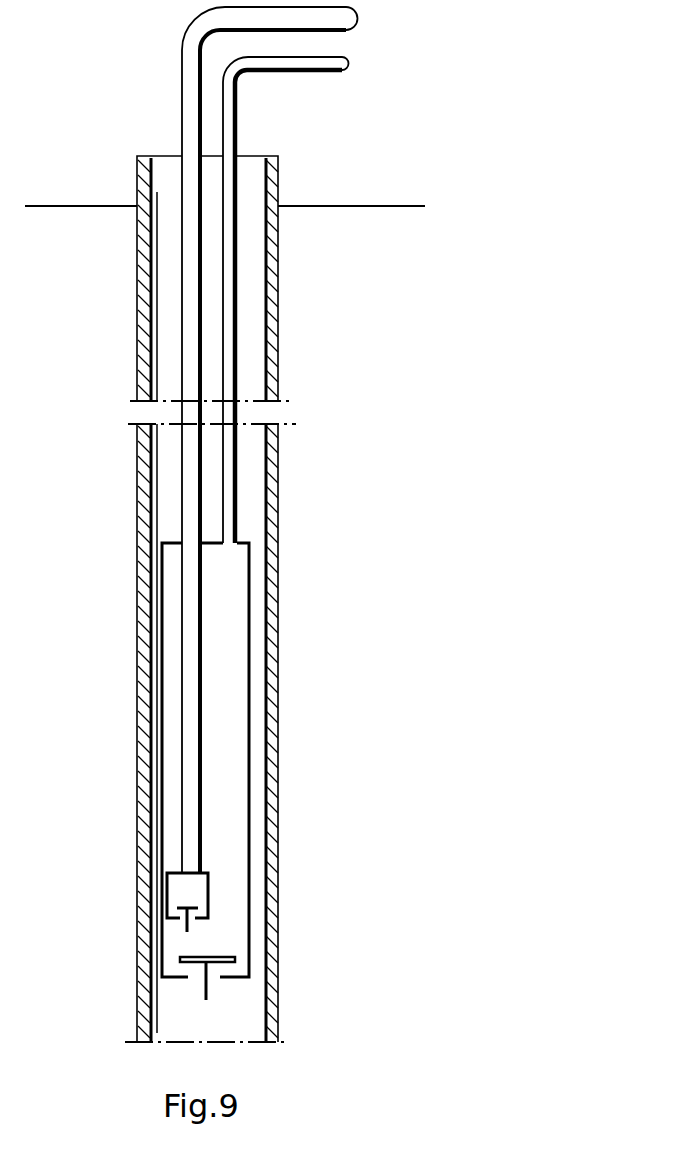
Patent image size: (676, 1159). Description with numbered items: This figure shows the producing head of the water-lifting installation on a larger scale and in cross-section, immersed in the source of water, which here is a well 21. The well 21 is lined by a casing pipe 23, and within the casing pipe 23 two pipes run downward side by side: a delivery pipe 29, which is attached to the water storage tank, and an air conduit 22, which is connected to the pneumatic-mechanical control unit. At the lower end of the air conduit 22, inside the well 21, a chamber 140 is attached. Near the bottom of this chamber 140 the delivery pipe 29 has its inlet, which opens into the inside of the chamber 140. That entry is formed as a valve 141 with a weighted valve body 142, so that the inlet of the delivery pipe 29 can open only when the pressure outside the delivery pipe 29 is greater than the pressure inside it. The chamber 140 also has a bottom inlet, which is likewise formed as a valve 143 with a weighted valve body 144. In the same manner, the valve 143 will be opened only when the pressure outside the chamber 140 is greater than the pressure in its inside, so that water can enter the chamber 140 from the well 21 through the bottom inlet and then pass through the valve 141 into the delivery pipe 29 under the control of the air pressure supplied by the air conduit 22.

The well 21 is at (281, 325).
The air conduit 22 is at (228, 107).
The casing pipe 23 is at (273, 505).
The delivery pipe 29 is at (188, 107).
The chamber 140 is at (239, 597).
The valve 141 is at (192, 885).
The weighted valve body 142 is at (178, 905).
The valve 143 is at (210, 973).
The weighted valve body 144 is at (224, 953).